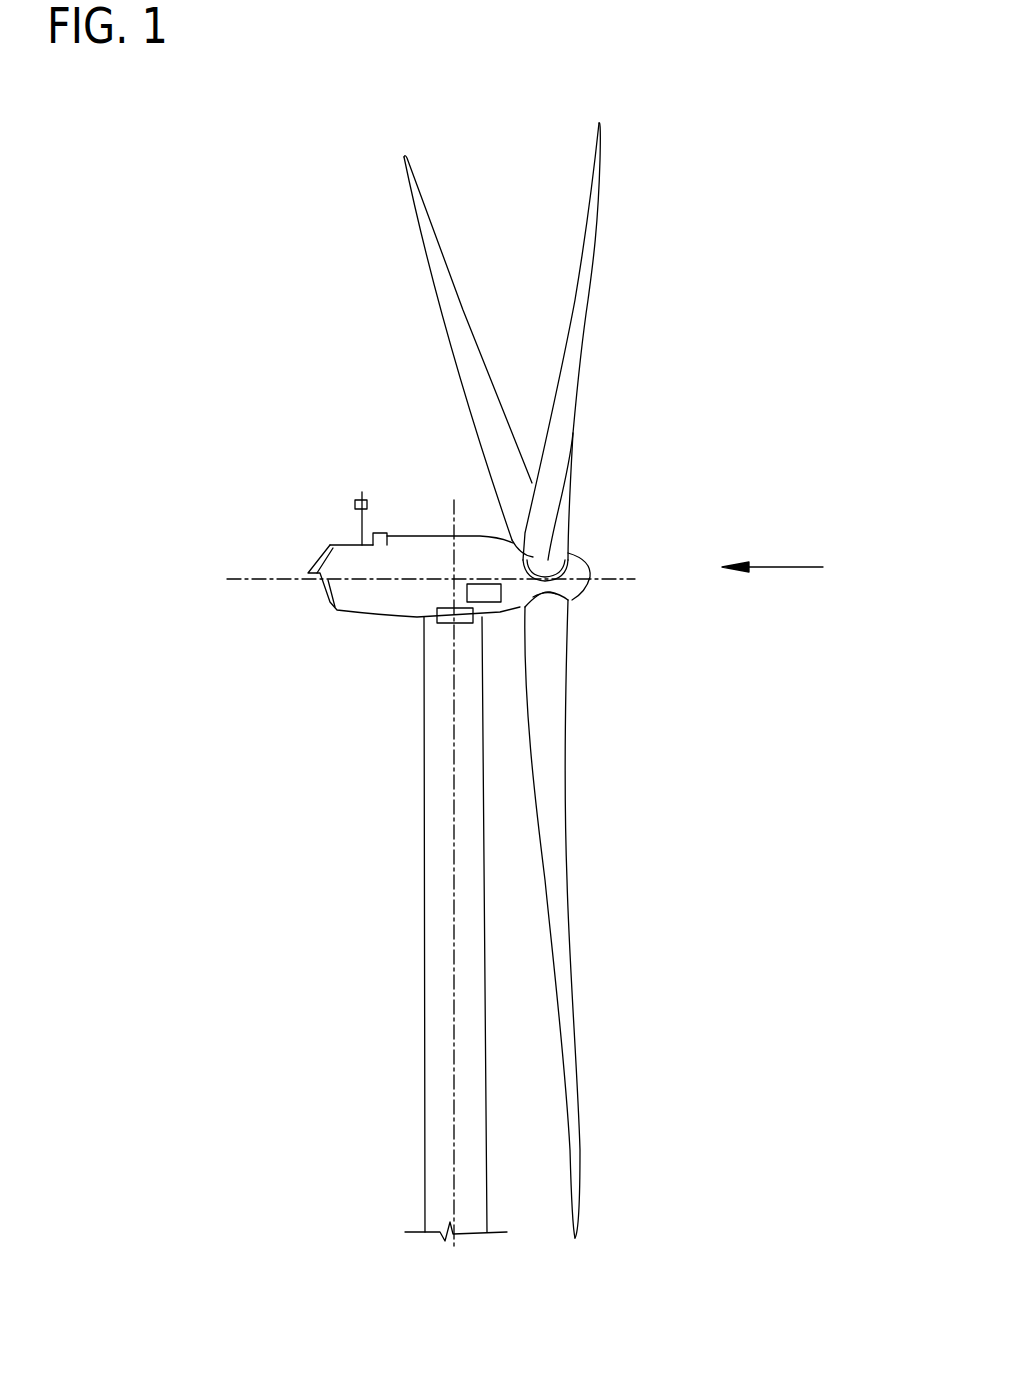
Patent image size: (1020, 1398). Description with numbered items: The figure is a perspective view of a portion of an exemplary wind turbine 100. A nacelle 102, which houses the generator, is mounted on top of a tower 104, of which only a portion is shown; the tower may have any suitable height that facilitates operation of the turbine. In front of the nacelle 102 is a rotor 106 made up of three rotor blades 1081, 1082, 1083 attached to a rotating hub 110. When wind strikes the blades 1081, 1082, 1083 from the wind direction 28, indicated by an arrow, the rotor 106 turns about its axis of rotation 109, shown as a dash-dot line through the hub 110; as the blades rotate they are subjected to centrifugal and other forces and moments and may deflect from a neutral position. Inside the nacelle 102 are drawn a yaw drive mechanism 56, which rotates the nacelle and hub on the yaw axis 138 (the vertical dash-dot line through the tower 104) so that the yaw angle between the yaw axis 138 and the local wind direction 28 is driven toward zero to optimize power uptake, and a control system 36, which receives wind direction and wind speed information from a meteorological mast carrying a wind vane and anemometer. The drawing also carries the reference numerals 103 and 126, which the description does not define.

The wind turbine 100 is at (298, 202).
The nacelle 102 is at (357, 617).
The sensor 103 is at (338, 492).
The tower 104 is at (425, 877).
The rotor 106 is at (593, 680).
The rotor blade 1081 is at (598, 202).
The rotor blade 1082 is at (436, 238).
The rotor blade 1083 is at (572, 988).
The axis of rotation 109 is at (610, 577).
The rotating hub 110 is at (585, 585).
The blade root 126 is at (543, 602).
The yaw axis 138 is at (453, 785).
The control system 36 is at (485, 595).
The yaw drive mechanism 56 is at (443, 608).
The wind direction 28 is at (793, 567).